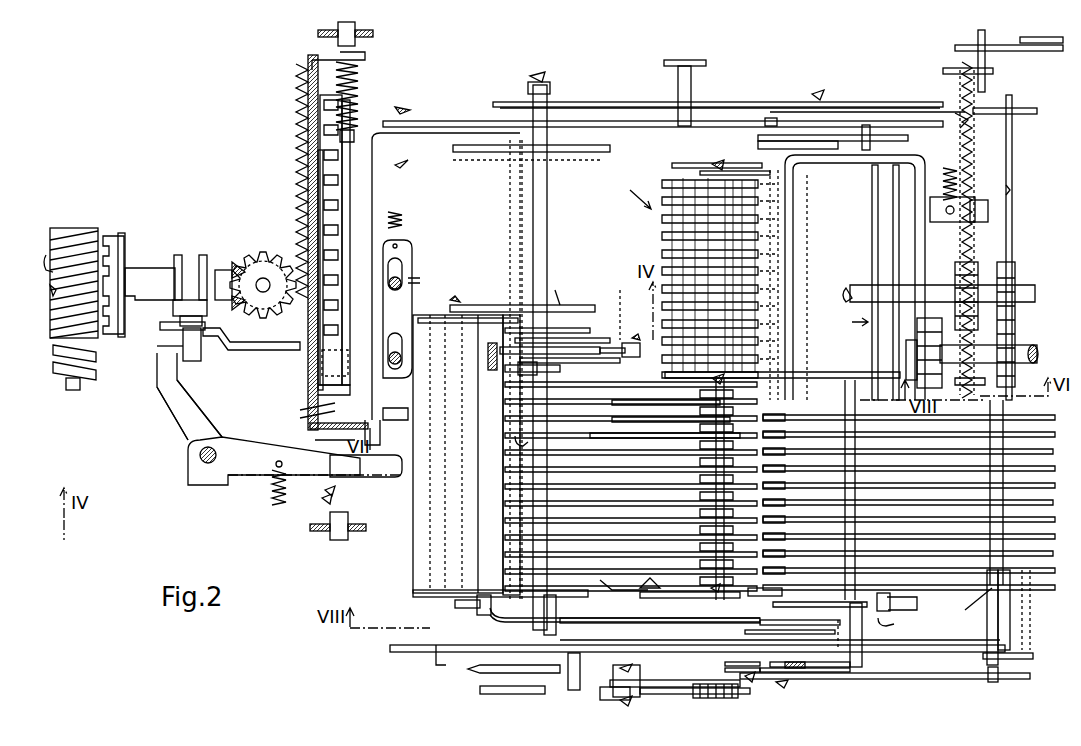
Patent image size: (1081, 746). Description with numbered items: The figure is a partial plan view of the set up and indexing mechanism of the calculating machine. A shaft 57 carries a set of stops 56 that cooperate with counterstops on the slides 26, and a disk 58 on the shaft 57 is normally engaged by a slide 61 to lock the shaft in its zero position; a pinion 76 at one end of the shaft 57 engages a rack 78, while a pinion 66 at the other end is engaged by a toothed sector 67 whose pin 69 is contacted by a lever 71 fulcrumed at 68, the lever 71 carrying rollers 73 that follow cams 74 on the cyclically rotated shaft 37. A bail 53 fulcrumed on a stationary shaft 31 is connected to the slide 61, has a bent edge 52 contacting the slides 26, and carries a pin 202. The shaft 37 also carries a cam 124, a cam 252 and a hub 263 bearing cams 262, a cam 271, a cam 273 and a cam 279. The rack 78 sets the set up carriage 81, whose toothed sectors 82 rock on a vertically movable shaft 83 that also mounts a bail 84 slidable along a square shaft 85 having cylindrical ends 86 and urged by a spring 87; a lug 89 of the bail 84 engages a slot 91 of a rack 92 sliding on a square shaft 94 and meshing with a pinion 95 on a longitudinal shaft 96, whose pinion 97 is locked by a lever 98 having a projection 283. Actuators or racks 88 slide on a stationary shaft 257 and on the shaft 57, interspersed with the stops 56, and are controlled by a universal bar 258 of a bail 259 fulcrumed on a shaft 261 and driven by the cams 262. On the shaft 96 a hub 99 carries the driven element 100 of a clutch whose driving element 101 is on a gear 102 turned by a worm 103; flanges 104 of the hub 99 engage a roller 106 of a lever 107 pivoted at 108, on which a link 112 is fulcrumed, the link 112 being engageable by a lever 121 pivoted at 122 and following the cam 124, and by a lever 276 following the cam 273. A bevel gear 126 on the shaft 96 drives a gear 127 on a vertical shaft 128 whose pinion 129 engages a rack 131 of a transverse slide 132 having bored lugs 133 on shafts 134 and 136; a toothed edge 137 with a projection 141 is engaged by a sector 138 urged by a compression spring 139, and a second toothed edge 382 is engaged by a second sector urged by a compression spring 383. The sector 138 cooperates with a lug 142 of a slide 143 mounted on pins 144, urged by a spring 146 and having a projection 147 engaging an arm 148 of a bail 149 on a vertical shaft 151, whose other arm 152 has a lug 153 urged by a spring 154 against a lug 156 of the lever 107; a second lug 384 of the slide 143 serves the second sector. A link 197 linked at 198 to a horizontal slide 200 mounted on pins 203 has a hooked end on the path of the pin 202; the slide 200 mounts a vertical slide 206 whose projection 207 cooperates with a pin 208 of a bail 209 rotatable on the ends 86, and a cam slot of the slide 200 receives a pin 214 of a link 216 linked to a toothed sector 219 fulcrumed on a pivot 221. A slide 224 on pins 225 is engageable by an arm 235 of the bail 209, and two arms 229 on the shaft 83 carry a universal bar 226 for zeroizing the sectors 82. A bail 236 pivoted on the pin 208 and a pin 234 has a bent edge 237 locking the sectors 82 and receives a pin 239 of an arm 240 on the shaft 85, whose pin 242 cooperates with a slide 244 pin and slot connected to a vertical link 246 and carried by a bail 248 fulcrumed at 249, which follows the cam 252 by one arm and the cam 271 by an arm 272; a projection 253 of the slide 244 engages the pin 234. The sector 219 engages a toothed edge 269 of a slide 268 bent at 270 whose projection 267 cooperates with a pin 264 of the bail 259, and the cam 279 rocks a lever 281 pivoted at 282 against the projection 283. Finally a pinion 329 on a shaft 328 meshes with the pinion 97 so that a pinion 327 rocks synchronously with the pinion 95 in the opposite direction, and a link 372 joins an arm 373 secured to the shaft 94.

The slide 26 is at (1040, 430).
The stationary shaft 31 is at (1012, 628).
The shaft 37 is at (533, 200).
The bent edge 52 is at (975, 598).
The bail 53 is at (987, 622).
The stops 56 is at (590, 435).
The shaft 57 is at (722, 586).
The disk 58 is at (612, 420).
The slide 61 is at (858, 380).
The pinion 66 is at (700, 684).
The toothed sector 67 is at (782, 688).
The fulcrum 68 is at (640, 684).
The pin 69 is at (640, 694).
The lever 71 is at (634, 668).
The rollers 73 is at (598, 694).
The cams 74 is at (480, 688).
The pinion 76 is at (730, 372).
The rack 78 is at (848, 382).
The set up carriage 81 is at (740, 251).
The toothed sector 82 is at (662, 252).
The shaft 83 is at (716, 164).
The bail 84 is at (872, 242).
The square shaft 85 is at (893, 262).
The cylindrical ends 86 is at (896, 112).
The spring 87 is at (950, 168).
The racks 88 is at (560, 368).
The lug 89 is at (980, 200).
The slot 91 is at (992, 226).
The rack 92 is at (966, 118).
The square shaft 94 is at (962, 68).
The pinion 95 is at (958, 270).
The longitudinal shaft 96 is at (48, 256).
The pinion 97 is at (1015, 282).
The lever 98 is at (1014, 196).
The hub 99 is at (157, 268).
The driven element 100 is at (128, 240).
The driving element 101 is at (110, 236).
The gear 102 is at (80, 228).
The worm 103 is at (80, 366).
The flanges 104 is at (208, 258).
The roller 106 is at (202, 320).
The lever 107 is at (168, 324).
The pivot 108 is at (157, 346).
The link 112 is at (256, 350).
The lever 121 is at (580, 347).
The pivot 122 is at (622, 342).
The cam 124 is at (556, 372).
The bevel gear 126 is at (228, 268).
The bevel gear 127 is at (262, 250).
The vertical shaft 128 is at (265, 276).
The pinion 129 is at (246, 262).
The rack 131 is at (296, 92).
The transverse slide 132 is at (306, 128).
The bored lugs 133 is at (360, 56).
The shaft 134 is at (325, 492).
The shaft 136 is at (350, 135).
The bent edge 137 is at (322, 256).
The sector 138 is at (320, 360).
The compression spring 139 is at (404, 268).
The projection 141 is at (318, 386).
The lug 142 is at (310, 425).
The slide 143 is at (407, 246).
The stationary pins 144 is at (420, 280).
The spring 146 is at (402, 218).
The projection 147 is at (389, 436).
The arm 148 is at (368, 470).
The bail 149 is at (208, 485).
The vertical shaft 151 is at (200, 456).
The arm 152 is at (182, 428).
The lug 153 is at (182, 358).
The spring 154 is at (274, 488).
The lug 156 is at (200, 345).
The link 197 is at (952, 679).
The linkage point 198 is at (800, 670).
The horizontal slide 200 is at (490, 645).
The pin 202 is at (996, 680).
The stationary pins 203 is at (436, 660).
The vertical slide 206 is at (806, 668).
The projection 207 is at (845, 672).
The pin 208 is at (862, 654).
The bail 209 is at (925, 160).
The pin 214 is at (582, 658).
The link 216 is at (745, 636).
The toothed sector 219 is at (700, 620).
The stationary pivot 221 is at (745, 650).
The slide 224 is at (621, 580).
The pins 225 is at (684, 583).
The universal bar 226 is at (662, 220).
The arms 229 is at (672, 165).
The pin 234 is at (866, 125).
The arm 235 is at (840, 640).
The bail 236 is at (800, 218).
The bent edge 237 is at (770, 175).
The pin 239 is at (818, 175).
The arm 240 is at (828, 136).
The pin 242 is at (775, 118).
The slide 244 is at (608, 148).
The vertical link 246 is at (706, 63).
The bail 248 is at (372, 186).
The fulcrum 249 is at (412, 110).
The cam 252 is at (540, 448).
The projection 253 is at (822, 141).
The stationary shaft 257 is at (545, 584).
The universal bar 258 is at (478, 570).
The bail 259 is at (430, 538).
The stationary shaft 261 is at (440, 556).
The cams 262 is at (556, 290).
The hub 263 is at (512, 172).
The pin 264 is at (520, 620).
The projection 267 is at (462, 608).
The slide 268 is at (560, 620).
The toothed edge 269 is at (782, 634).
The bend 270 is at (492, 604).
The cam 271 is at (576, 152).
The arm 272 is at (442, 128).
The cam 273 is at (560, 318).
The lever 276 is at (618, 305).
The cam 279 is at (572, 108).
The lever 281 is at (725, 108).
The pivot 282 is at (820, 90).
The projection 283 is at (1005, 108).
The pinion 327 is at (930, 318).
The shaft 328 is at (1030, 364).
The pinion 329 is at (1012, 348).
The link 372 is at (1038, 50).
The arm 373 is at (1008, 50).
The second toothed edge 382 is at (318, 162).
The compression spring 383 is at (358, 82).
The second lug 384 is at (303, 407).